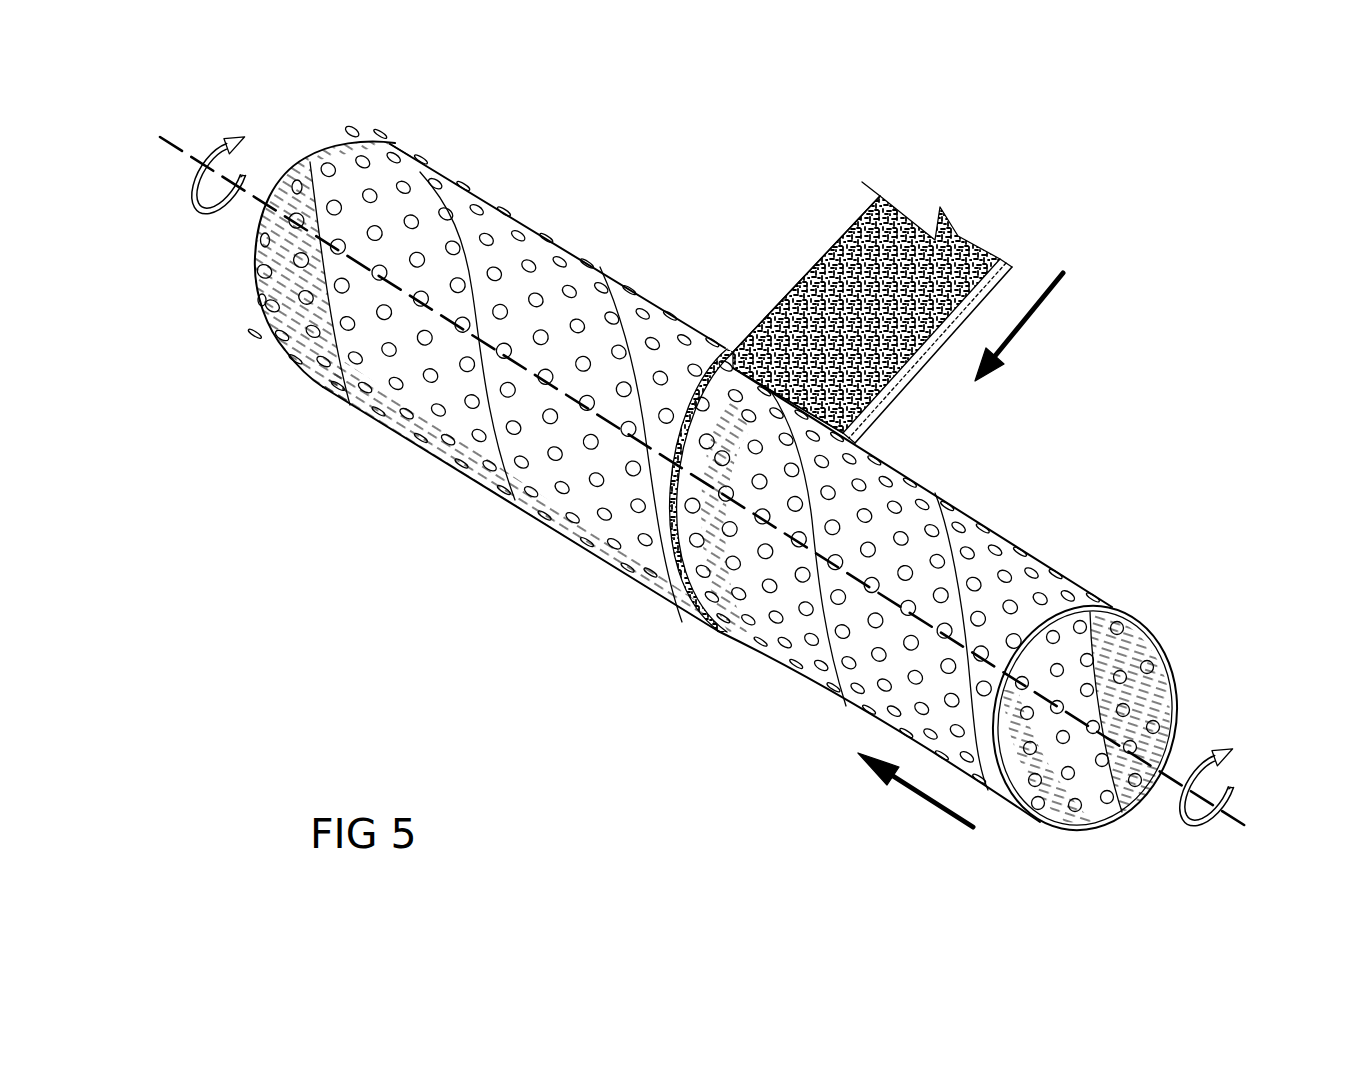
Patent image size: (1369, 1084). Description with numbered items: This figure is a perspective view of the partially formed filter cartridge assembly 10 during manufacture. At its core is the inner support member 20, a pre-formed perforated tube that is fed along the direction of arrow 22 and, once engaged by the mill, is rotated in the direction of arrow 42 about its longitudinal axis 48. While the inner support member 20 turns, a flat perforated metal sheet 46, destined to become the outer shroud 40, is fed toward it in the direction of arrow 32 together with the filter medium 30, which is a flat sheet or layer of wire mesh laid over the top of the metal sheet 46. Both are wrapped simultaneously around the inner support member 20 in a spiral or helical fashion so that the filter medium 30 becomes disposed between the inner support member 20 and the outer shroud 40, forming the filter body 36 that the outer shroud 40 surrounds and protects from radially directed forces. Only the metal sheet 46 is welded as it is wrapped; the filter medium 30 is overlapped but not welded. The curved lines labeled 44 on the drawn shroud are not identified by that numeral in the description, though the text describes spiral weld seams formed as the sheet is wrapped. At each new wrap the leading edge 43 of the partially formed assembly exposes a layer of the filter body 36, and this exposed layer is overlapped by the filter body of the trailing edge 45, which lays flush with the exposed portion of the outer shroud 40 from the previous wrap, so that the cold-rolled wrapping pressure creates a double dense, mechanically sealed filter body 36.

The filter cartridge assembly 10 is at (470, 163).
The inner support member 20 is at (990, 543).
The arrow 22 is at (932, 805).
The filter medium 30 is at (837, 277).
The arrow 32 is at (1035, 305).
The filter body 36 is at (718, 627).
The outer shroud 40 is at (480, 480).
The arrow 42 is at (222, 140).
The leading edge 43 is at (697, 445).
The helical bands 44 is at (473, 263).
The trailing edge 45 is at (760, 318).
The metal sheet 46 is at (913, 377).
The longitudinal axis 48 is at (162, 143).